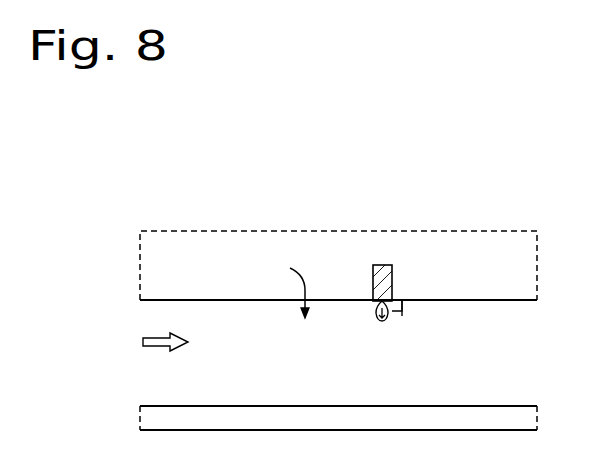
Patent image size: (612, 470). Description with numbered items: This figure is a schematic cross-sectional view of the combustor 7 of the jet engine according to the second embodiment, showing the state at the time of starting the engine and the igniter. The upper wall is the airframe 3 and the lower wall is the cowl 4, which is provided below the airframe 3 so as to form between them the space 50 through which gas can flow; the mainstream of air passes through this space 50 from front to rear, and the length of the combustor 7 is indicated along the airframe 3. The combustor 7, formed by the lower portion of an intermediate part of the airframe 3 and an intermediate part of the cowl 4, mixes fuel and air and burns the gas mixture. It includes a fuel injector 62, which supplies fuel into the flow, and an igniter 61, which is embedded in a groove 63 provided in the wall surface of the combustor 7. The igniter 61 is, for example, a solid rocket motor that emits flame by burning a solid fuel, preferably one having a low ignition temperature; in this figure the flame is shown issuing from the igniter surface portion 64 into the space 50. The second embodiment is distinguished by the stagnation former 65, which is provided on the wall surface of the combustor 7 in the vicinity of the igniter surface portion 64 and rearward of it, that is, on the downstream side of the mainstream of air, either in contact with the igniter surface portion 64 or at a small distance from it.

The airframe 3 is at (522, 292).
The cowl 4 is at (522, 421).
The combustor 7 is at (534, 210).
The space 50 is at (108, 354).
The igniter 61 is at (373, 275).
The fuel injector 62 is at (291, 284).
The groove 63 is at (392, 280).
The igniter surface portion 64 is at (375, 303).
The stagnation former 65 is at (402, 313).